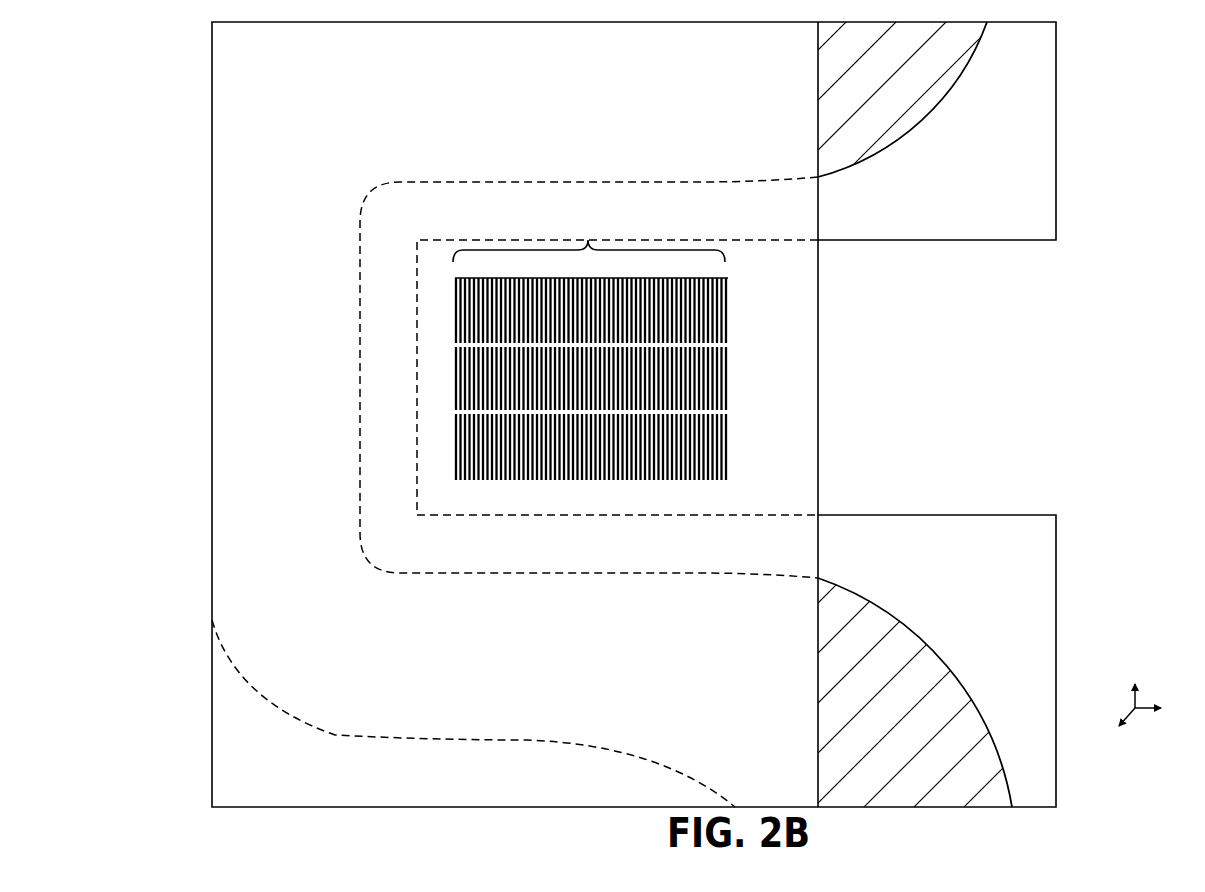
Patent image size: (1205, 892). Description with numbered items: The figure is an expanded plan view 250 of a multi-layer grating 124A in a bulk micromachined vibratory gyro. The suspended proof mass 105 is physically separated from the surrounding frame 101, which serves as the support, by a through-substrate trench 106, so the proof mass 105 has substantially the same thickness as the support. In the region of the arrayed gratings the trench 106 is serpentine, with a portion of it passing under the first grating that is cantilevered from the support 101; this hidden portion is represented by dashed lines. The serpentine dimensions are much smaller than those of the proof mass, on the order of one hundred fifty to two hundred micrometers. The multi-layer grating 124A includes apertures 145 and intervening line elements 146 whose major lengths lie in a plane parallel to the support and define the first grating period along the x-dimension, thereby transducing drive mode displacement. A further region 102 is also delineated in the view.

The expanded plan view 250 is at (186, 130).
The dielectric layer 102 is at (572, 114).
The proof mass 105 is at (1014, 380).
The frame 101 is at (995, 565).
The trench 106 is at (868, 720).
The multi-layer grating 124A is at (589, 236).
The apertures 145 is at (729, 307).
The intervening line elements 146 is at (726, 282).